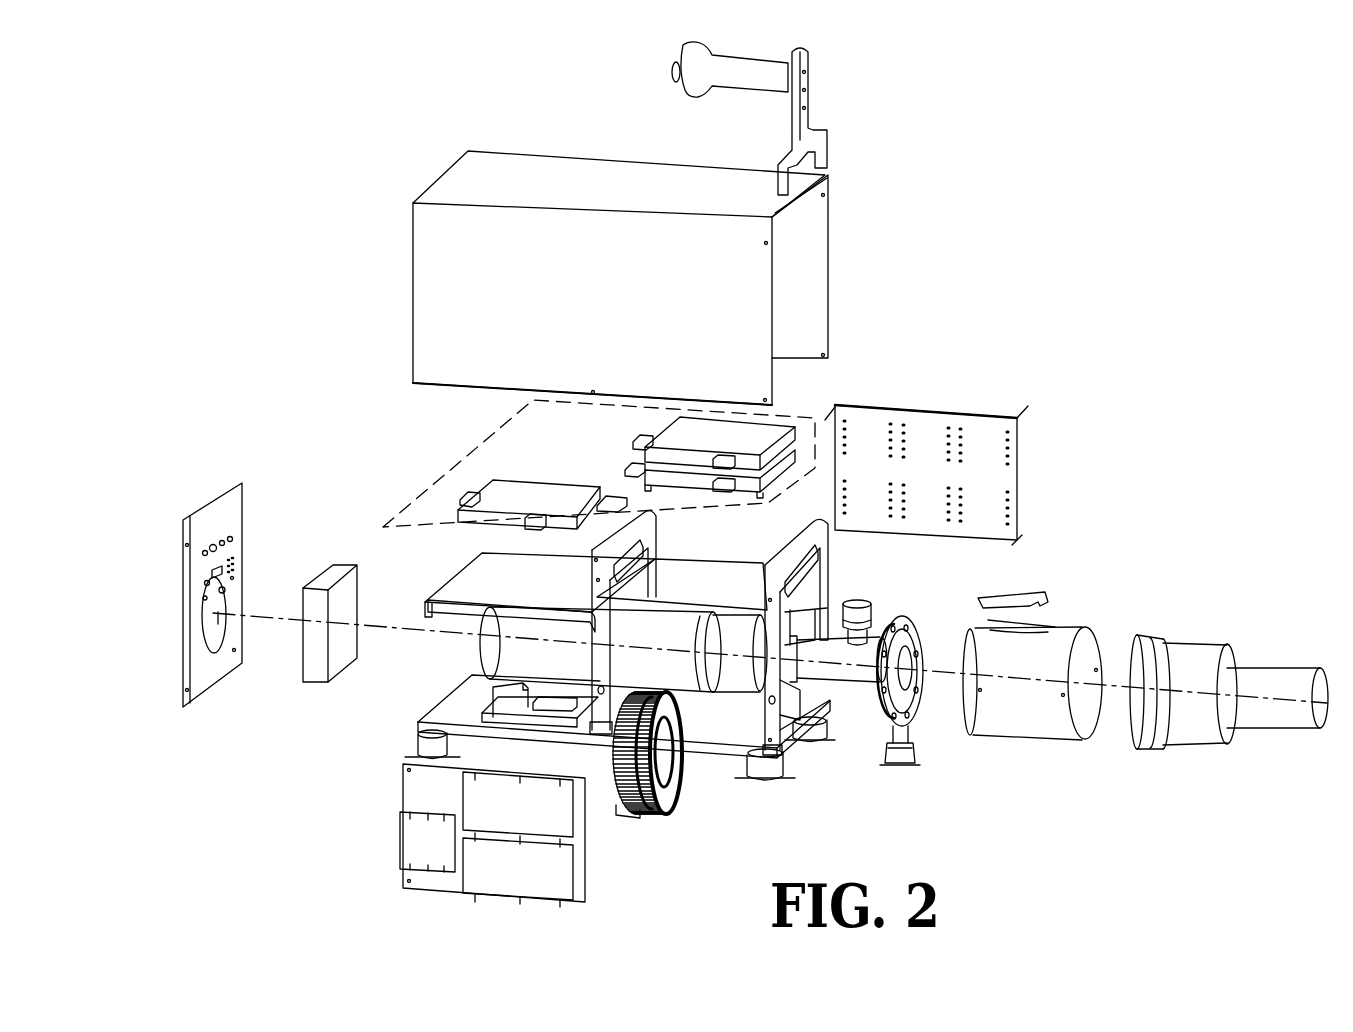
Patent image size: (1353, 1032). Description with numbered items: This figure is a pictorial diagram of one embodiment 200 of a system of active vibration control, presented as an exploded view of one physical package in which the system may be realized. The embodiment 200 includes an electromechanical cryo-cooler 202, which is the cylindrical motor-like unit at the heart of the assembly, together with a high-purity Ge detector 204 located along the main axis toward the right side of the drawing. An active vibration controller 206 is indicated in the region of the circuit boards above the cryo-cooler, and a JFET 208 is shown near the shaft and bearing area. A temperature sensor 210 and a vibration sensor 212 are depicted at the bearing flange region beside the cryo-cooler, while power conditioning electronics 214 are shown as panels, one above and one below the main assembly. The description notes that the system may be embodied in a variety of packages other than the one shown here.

The embodiment 200 is at (327, 328).
The electromechanical cryo-cooler 202 is at (478, 645).
The high-purity Ge detector 204 is at (1213, 647).
The active vibration controller 206 is at (467, 458).
The JFET 208 is at (918, 664).
The temperature sensor 210 is at (912, 673).
The vibration sensor 212 is at (887, 717).
The power conditioning electronics 214 is at (963, 412).